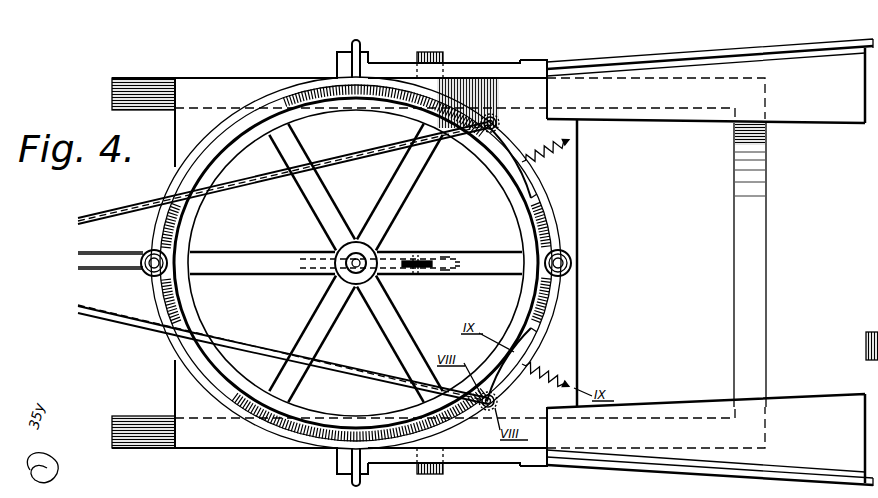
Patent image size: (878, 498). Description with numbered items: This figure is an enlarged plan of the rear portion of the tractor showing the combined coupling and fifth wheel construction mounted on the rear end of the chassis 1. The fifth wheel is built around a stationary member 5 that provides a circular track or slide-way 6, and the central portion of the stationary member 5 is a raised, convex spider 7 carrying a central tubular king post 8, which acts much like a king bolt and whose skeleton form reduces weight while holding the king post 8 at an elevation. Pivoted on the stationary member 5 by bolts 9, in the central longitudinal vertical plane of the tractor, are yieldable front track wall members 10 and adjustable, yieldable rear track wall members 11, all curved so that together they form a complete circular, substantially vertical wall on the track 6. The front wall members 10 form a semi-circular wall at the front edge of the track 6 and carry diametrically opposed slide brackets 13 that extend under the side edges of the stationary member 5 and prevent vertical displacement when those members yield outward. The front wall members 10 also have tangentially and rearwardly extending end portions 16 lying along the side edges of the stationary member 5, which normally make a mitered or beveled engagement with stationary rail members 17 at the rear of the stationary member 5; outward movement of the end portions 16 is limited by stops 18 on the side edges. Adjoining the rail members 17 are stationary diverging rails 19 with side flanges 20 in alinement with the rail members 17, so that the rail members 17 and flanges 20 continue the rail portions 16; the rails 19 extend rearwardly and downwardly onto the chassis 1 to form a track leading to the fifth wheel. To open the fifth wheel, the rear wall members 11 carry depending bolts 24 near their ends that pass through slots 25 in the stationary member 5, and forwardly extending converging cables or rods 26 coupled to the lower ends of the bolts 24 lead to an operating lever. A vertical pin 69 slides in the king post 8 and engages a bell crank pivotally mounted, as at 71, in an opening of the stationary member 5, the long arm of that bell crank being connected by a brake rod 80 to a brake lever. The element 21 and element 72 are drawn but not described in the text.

The chassis 1 is at (146, 96).
The stationary member 5 is at (562, 338).
The circular track or slide-way 6 is at (522, 313).
The spider 7 is at (474, 266).
The king post 8 is at (357, 286).
The bolts 9 is at (145, 254).
The yieldable front track wall members 10 is at (192, 362).
The adjustable and yieldable rear track wall members 11 is at (562, 314).
The slide brackets 13 is at (350, 52).
The end portions 16 is at (462, 66).
The stationary rail members 17 is at (520, 60).
The stops 18 is at (447, 30).
The stationary diverging rails 19 is at (822, 125).
The side flanges 20 is at (822, 44).
The spring 21 is at (566, 150).
The depending bolts 24 is at (498, 122).
The slots 25 is at (488, 131).
The converging cables or rods 26 is at (248, 190).
The vertical pin 69 is at (357, 243).
The pivot of bell crank 71 is at (418, 258).
The arm bar 72 is at (104, 262).
The brake rod 80 is at (100, 252).